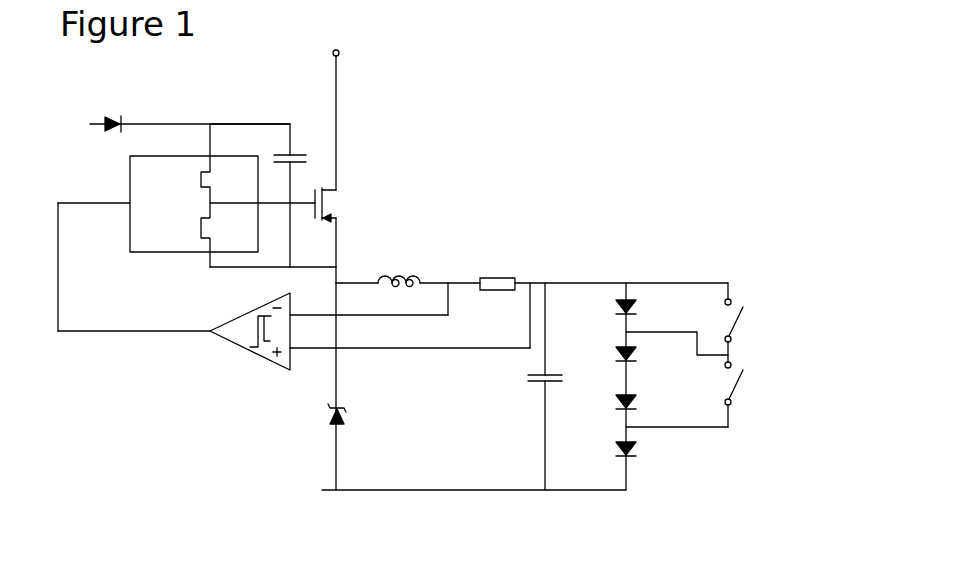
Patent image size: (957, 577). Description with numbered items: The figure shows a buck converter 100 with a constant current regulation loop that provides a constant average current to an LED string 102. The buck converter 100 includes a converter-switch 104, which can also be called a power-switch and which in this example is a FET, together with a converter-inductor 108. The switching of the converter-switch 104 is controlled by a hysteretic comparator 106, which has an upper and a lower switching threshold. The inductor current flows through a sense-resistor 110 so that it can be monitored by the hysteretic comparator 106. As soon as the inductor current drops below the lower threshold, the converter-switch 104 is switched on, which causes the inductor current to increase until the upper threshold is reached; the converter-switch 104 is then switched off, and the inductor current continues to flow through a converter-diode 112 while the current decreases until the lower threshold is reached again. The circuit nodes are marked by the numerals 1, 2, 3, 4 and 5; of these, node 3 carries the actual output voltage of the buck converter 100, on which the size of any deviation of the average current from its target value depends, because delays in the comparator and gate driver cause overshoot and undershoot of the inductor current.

The buck converter 100 is at (469, 141).
The LED string 102 is at (632, 262).
The converter-switch 104 is at (349, 178).
The hysteretic comparator 106 is at (218, 335).
The converter-inductor 108 is at (413, 277).
The sense-resistor 110 is at (502, 277).
The converter-diode 112 is at (328, 417).
The supply node 1 is at (250, 111).
The switching node 2 is at (357, 263).
The node 3 is at (509, 303).
The inductor output node 4 is at (385, 286).
The comparator output node 5 is at (134, 318).